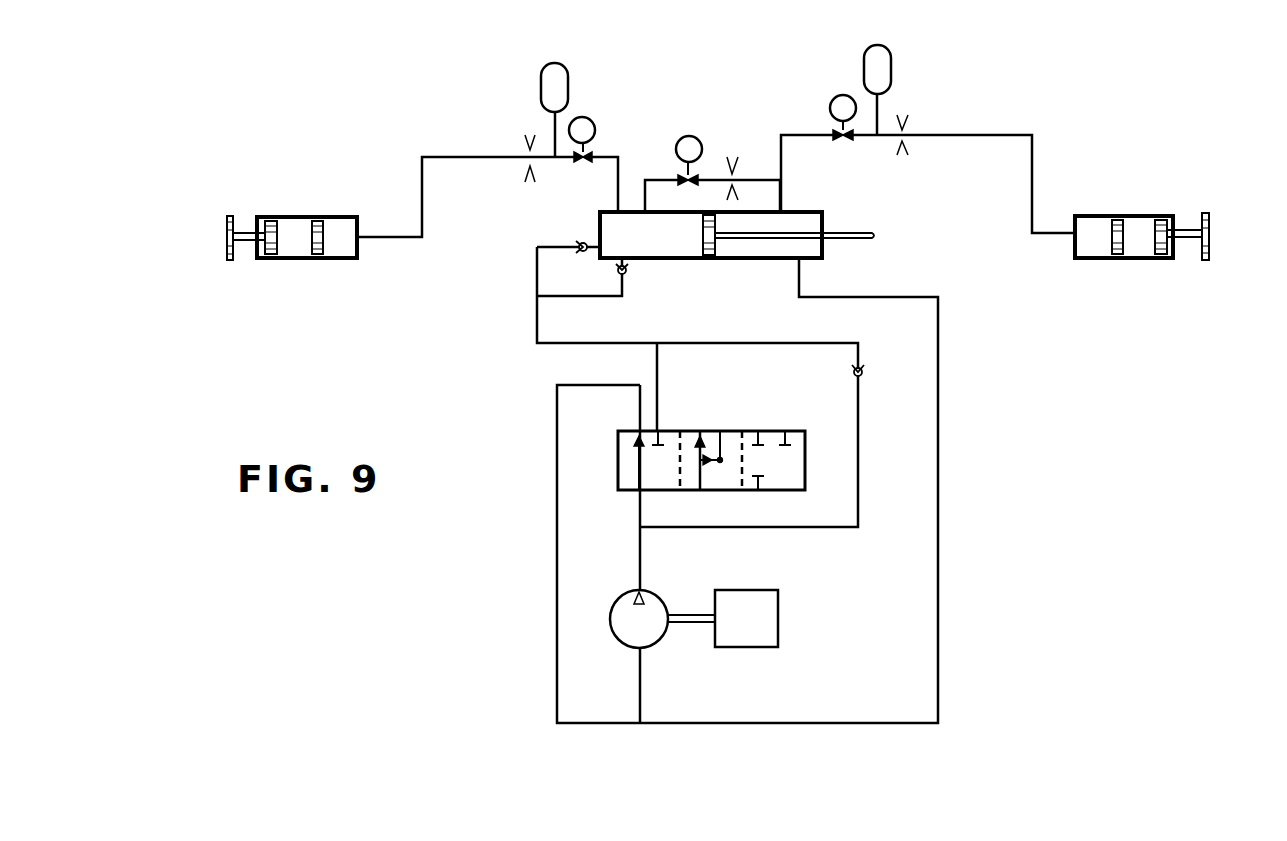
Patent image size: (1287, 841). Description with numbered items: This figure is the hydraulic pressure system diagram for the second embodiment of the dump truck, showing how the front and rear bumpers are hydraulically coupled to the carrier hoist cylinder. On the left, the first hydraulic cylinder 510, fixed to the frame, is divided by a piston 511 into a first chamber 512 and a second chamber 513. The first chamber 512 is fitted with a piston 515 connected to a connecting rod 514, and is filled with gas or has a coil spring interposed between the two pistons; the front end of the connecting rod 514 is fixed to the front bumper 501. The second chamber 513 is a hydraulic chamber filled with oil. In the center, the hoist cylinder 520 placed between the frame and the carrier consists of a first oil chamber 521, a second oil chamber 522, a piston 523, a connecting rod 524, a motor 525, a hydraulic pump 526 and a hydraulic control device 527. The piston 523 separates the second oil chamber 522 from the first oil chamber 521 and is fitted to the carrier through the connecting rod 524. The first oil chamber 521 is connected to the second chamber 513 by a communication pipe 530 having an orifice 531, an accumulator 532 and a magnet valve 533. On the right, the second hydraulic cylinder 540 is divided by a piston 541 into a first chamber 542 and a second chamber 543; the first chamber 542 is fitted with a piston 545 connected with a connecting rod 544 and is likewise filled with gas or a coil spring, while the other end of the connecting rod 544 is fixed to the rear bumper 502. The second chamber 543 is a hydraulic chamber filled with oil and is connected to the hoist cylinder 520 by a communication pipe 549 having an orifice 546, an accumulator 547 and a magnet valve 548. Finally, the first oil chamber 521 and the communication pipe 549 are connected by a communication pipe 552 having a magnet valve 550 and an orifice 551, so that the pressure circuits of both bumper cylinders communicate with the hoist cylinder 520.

The front bumper 501 is at (227, 228).
The rear bumper 502 is at (1210, 245).
The first hydraulic cylinder 510 is at (300, 215).
The piston 511 is at (316, 217).
The first chamber 512 is at (300, 250).
The second chamber 513 is at (350, 250).
The connecting rod 514 is at (243, 245).
The piston 515 is at (270, 257).
The hoist cylinder 520 is at (643, 264).
The first oil chamber 521 is at (600, 228).
The second oil chamber 522 is at (775, 254).
The piston 523 is at (707, 252).
The connecting rod 524 is at (838, 240).
The motor 525 is at (780, 628).
The hydraulic pump 526 is at (662, 598).
The hydraulic control device 527 is at (699, 420).
The communication pipe 530 is at (466, 138).
The orifice 531 is at (525, 140).
The accumulator 532 is at (568, 82).
The magnet valve 533 is at (590, 123).
The second hydraulic cylinder 540 is at (1144, 214).
The piston 541 is at (1130, 200).
The first chamber 542 is at (1136, 250).
The second chamber 543 is at (1086, 250).
The connecting rod 544 is at (1185, 230).
The piston 545 is at (1162, 258).
The orifice 546 is at (903, 118).
The accumulator 547 is at (912, 72).
The magnet valve 548 is at (830, 108).
The communication pipe 549 is at (800, 140).
The magnet valve 550 is at (708, 120).
The orifice 551 is at (738, 160).
The communication pipe 552 is at (650, 178).